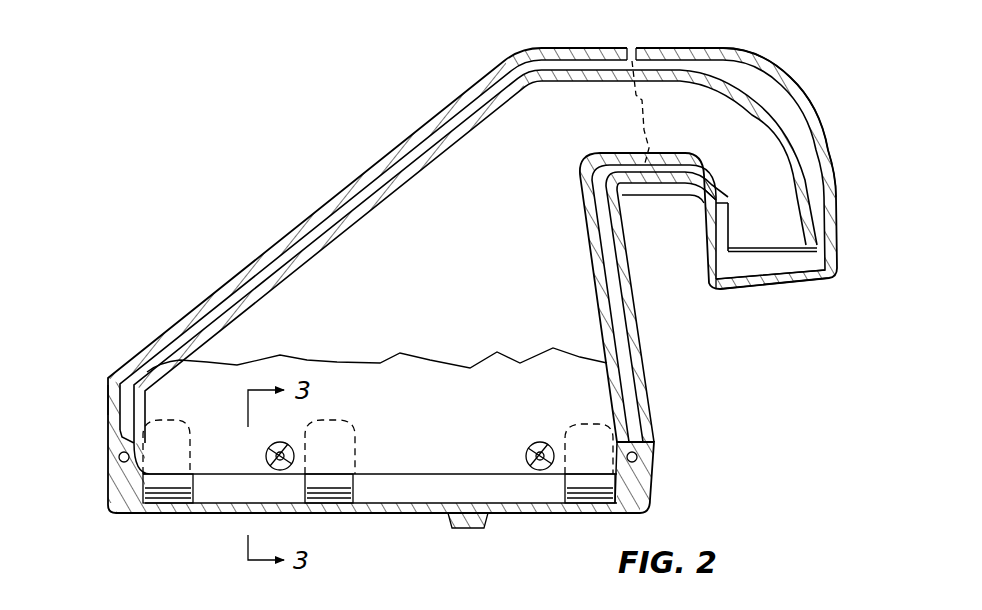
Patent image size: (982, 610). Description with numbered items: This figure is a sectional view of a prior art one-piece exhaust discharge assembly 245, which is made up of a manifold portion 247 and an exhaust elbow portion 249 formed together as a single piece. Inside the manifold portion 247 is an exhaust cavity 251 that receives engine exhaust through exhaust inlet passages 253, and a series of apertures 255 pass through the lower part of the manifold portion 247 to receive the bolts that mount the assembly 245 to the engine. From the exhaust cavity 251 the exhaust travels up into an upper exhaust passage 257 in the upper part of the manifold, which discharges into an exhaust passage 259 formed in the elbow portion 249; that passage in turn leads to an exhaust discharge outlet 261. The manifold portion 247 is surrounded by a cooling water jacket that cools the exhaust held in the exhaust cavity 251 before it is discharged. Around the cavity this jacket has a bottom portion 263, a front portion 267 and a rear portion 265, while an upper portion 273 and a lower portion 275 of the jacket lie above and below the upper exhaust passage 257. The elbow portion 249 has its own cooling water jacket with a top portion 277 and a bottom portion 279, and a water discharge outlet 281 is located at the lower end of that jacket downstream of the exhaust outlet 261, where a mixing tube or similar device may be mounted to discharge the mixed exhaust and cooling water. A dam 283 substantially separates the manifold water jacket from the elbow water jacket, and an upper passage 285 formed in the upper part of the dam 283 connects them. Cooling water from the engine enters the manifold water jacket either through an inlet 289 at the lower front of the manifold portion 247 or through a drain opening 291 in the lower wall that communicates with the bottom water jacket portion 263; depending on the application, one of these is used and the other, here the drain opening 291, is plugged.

The exhaust discharge assembly 245 is at (350, 50).
The manifold portion 247 is at (307, 190).
The exhaust elbow portion 249 is at (765, 46).
The exhaust cavity 251 is at (377, 288).
The exhaust inlet passages 253 is at (181, 420).
The apertures 255 is at (268, 449).
The upper exhaust passage 257 is at (605, 131).
The exhaust passage 259 is at (783, 208).
The exhaust discharge outlet 261 is at (790, 256).
The bottom portion of water jacket 263 is at (391, 504).
The rear portion of water jacket 265 is at (607, 312).
The front portion of water jacket 267 is at (278, 252).
The upper portion of water jacket 273 is at (577, 60).
The lower portion of water jacket 275 is at (629, 172).
The top portion of elbow water jacket 277 is at (790, 101).
The bottom portion of elbow water jacket 279 is at (692, 196).
The water discharge outlet 281 is at (777, 287).
The dam 283 is at (648, 113).
The upper passage 285 is at (631, 56).
The inlet 289 is at (107, 398).
The drain opening 291 is at (470, 519).